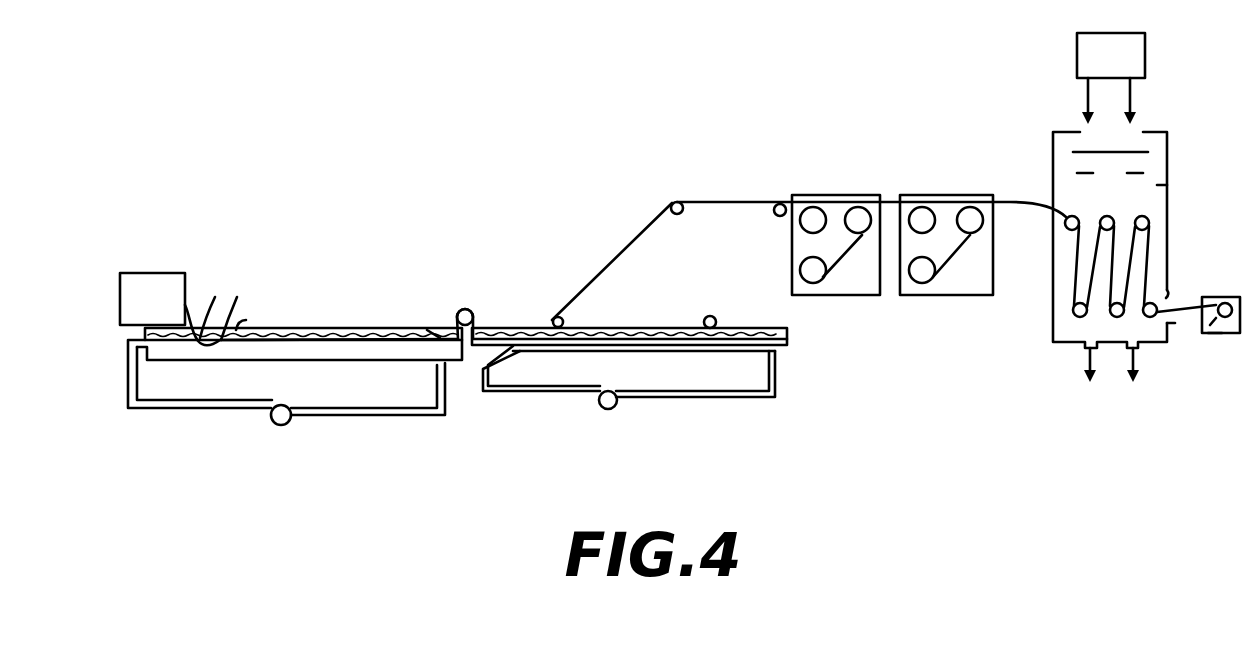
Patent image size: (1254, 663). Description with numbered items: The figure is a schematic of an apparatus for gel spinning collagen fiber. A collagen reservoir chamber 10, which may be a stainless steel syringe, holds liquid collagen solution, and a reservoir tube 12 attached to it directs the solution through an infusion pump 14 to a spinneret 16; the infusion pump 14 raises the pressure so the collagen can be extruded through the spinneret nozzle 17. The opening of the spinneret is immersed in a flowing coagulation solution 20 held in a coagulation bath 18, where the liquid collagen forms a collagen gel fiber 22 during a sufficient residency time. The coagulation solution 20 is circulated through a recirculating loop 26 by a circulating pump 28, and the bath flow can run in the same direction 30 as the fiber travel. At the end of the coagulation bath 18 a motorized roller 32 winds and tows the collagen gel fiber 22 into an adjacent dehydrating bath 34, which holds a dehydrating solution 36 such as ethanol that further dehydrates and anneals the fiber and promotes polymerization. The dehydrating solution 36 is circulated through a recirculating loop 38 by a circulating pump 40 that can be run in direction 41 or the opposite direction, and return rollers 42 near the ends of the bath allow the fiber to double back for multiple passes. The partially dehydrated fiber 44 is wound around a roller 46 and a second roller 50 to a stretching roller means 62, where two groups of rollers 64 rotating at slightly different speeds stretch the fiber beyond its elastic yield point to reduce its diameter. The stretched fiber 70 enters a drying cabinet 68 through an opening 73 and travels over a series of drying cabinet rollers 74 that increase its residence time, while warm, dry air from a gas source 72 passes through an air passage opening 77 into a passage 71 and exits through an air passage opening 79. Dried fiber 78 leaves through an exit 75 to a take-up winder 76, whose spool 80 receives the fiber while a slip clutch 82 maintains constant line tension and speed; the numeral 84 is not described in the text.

The collagen reservoir chamber 10 is at (158, 272).
The reservoir tube 12 is at (192, 306).
The infusion pump 14 is at (214, 307).
The spinneret 16 is at (235, 308).
The spinneret nozzle 17 is at (251, 316).
The coagulation bath 18 is at (403, 355).
The coagulation solution 20 is at (292, 330).
The collagen gel fiber 22 is at (427, 330).
The recirculating loop 26 is at (213, 416).
The circulating pump 28 is at (271, 431).
The direction of fiber travel 30 is at (358, 312).
The roller 32 is at (472, 305).
The dehydrating bath 34 is at (788, 345).
The dehydrating solution 36 is at (733, 347).
The recirculating loop 38 is at (537, 392).
The circulating pump 40 is at (599, 406).
The direction 41 is at (675, 312).
The return rollers 42 is at (714, 316).
The partially dehydrated fiber 44 is at (630, 243).
The roller 46 is at (682, 229).
The second roller 50 is at (782, 203).
The stretching roller means 62 is at (952, 196).
The rollers 64 is at (848, 208).
The drying cabinet 68 is at (1053, 132).
The stretched fiber 70 is at (1040, 203).
The passage 71 is at (1168, 186).
The gas source 72 is at (1100, 66).
The opening 73 is at (1053, 226).
The drying cabinet rollers 74 is at (1072, 311).
The exit 75 is at (1167, 290).
The take-up winder 76 is at (1215, 334).
The air passage opening 77 is at (1137, 129).
The dried fiber 78 is at (1183, 318).
The air passage opening 79 is at (1083, 348).
The spool 80 is at (1225, 332).
The slip clutch 82 is at (1210, 326).
The take-up housing 84 is at (1215, 297).